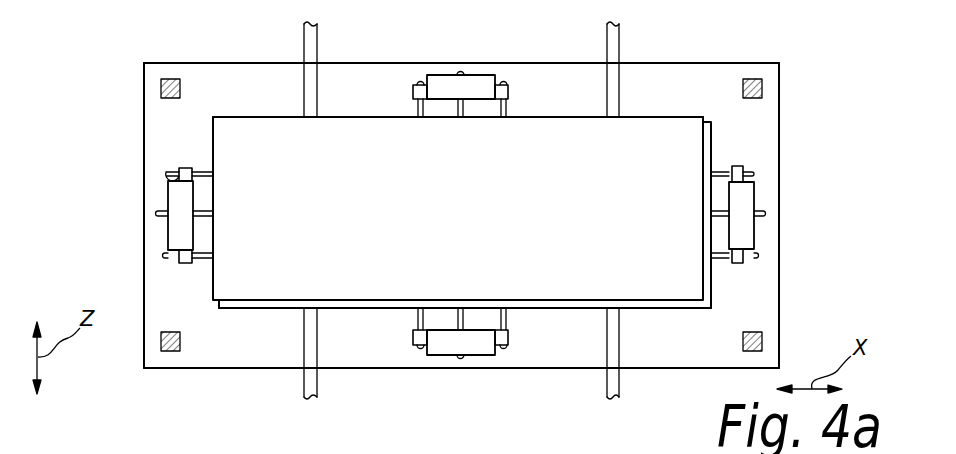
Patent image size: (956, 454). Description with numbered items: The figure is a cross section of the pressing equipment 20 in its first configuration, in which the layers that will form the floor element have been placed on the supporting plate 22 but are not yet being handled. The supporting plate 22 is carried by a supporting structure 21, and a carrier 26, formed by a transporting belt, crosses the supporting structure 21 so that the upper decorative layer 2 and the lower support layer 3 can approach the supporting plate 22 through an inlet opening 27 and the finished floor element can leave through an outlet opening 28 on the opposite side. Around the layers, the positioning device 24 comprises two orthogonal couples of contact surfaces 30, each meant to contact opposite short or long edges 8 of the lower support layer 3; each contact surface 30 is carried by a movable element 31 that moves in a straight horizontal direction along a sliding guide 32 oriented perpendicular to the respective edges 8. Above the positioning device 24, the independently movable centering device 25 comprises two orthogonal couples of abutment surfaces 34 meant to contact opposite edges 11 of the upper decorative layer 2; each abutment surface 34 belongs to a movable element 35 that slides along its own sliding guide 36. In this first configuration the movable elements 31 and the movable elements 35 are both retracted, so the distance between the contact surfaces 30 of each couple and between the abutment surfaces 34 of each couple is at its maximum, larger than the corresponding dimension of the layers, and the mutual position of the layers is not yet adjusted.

The upper decorative layer 2 is at (558, 293).
The lower support layer 3 is at (665, 308).
The edges of lower support layer 8 is at (712, 127).
The edges of upper decorative layer 11 is at (683, 117).
The pressing equipment 20 is at (115, 53).
The supporting structure 21 is at (172, 79).
The supporting plate 22 is at (158, 122).
The positioning device 24 is at (508, 90).
The centering device 25 is at (448, 82).
The carrier 26 is at (318, 57).
The inlet opening 27 is at (254, 45).
The outlet opening 28 is at (228, 382).
The contact surface 30 is at (413, 100).
The movable element 31 is at (507, 97).
The sliding guide 32 is at (752, 176).
The abutment surface 34 is at (483, 104).
The movable element 35 is at (448, 87).
The sliding guide 36 is at (762, 215).